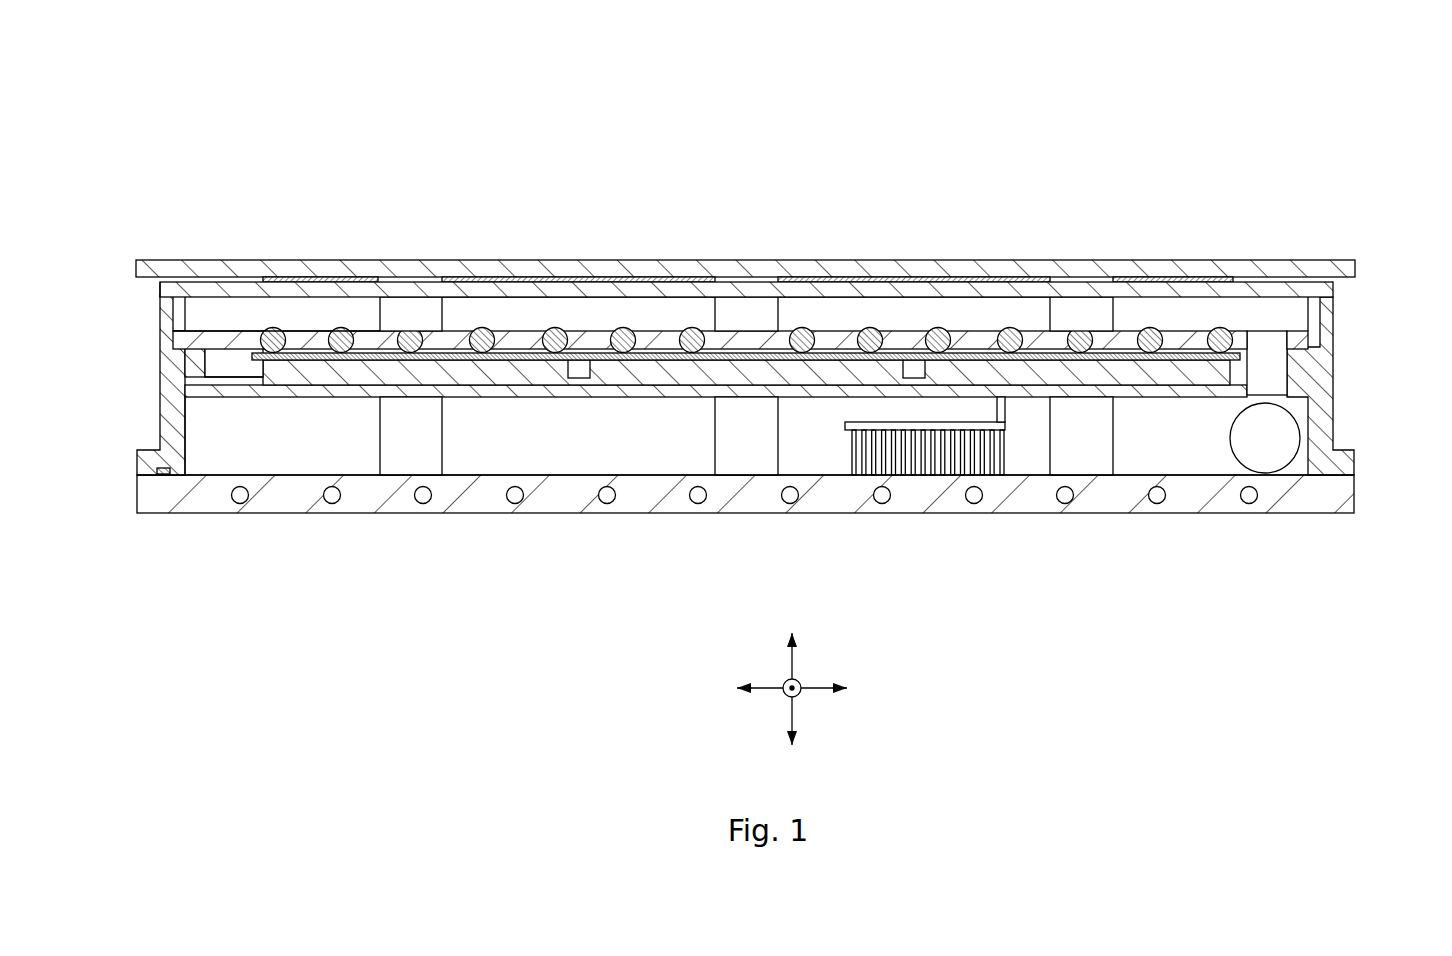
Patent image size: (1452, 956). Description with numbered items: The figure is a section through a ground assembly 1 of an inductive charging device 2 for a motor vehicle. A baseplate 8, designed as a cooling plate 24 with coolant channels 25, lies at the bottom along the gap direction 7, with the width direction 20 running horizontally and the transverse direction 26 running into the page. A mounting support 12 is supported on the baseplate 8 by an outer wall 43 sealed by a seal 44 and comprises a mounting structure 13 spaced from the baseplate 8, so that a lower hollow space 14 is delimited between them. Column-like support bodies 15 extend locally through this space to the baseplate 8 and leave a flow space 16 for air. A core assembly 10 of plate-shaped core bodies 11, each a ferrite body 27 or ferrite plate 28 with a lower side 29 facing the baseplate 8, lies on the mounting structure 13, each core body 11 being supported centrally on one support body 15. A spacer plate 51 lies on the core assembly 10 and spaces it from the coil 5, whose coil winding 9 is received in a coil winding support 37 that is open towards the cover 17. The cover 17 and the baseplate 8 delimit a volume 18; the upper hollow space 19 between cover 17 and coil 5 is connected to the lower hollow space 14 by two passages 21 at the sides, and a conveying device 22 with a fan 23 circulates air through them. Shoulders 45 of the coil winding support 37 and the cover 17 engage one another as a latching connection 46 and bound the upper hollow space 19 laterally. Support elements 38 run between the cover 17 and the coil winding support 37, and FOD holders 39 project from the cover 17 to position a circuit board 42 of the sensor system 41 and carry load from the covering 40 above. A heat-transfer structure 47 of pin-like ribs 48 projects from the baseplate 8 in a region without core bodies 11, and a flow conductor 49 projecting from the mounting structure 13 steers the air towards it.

The ground assembly 1 is at (1090, 167).
The charging device 2 is at (710, 161).
The coil 5 is at (686, 289).
The gap direction 7 is at (792, 662).
The baseplate 8 is at (745, 547).
The coil winding 9 is at (1235, 328).
The core assembly 10 is at (817, 394).
The core body 11 is at (837, 402).
The mounting support 12 is at (160, 428).
The mounting structure 13 is at (160, 380).
The lower hollow space 14 is at (745, 483).
The support body 15 is at (398, 442).
The flow space 16 is at (745, 483).
The cover 17 is at (160, 285).
The volume 18 is at (223, 458).
The upper hollow space 19 is at (273, 298).
The width direction 20 is at (818, 690).
The passage 21 is at (223, 387).
The conveying device 22 is at (1265, 438).
The fan 23 is at (1228, 450).
The cooling plate 24 is at (745, 547).
The channel 25 is at (426, 505).
The transverse direction 26 is at (783, 697).
The ferrite body 27 is at (837, 402).
The ferrite plate 28 is at (473, 375).
The lower side 29 is at (655, 420).
The coil winding support 37 is at (160, 325).
The support element 38 is at (767, 326).
The FOD holder 39 is at (405, 289).
The covering 40 is at (183, 260).
The sensor system 41 is at (699, 242).
The circuit board 42 is at (308, 280).
The outer wall 43 is at (185, 432).
The seal 44 is at (162, 476).
The shoulder 45 is at (170, 313).
The latching connection 46 is at (1345, 313).
The heat-transfer structure 47 is at (928, 509).
The pin-like ribs 48 is at (910, 470).
The flow conductor 49 is at (840, 433).
The spacer plate 51 is at (1182, 357).